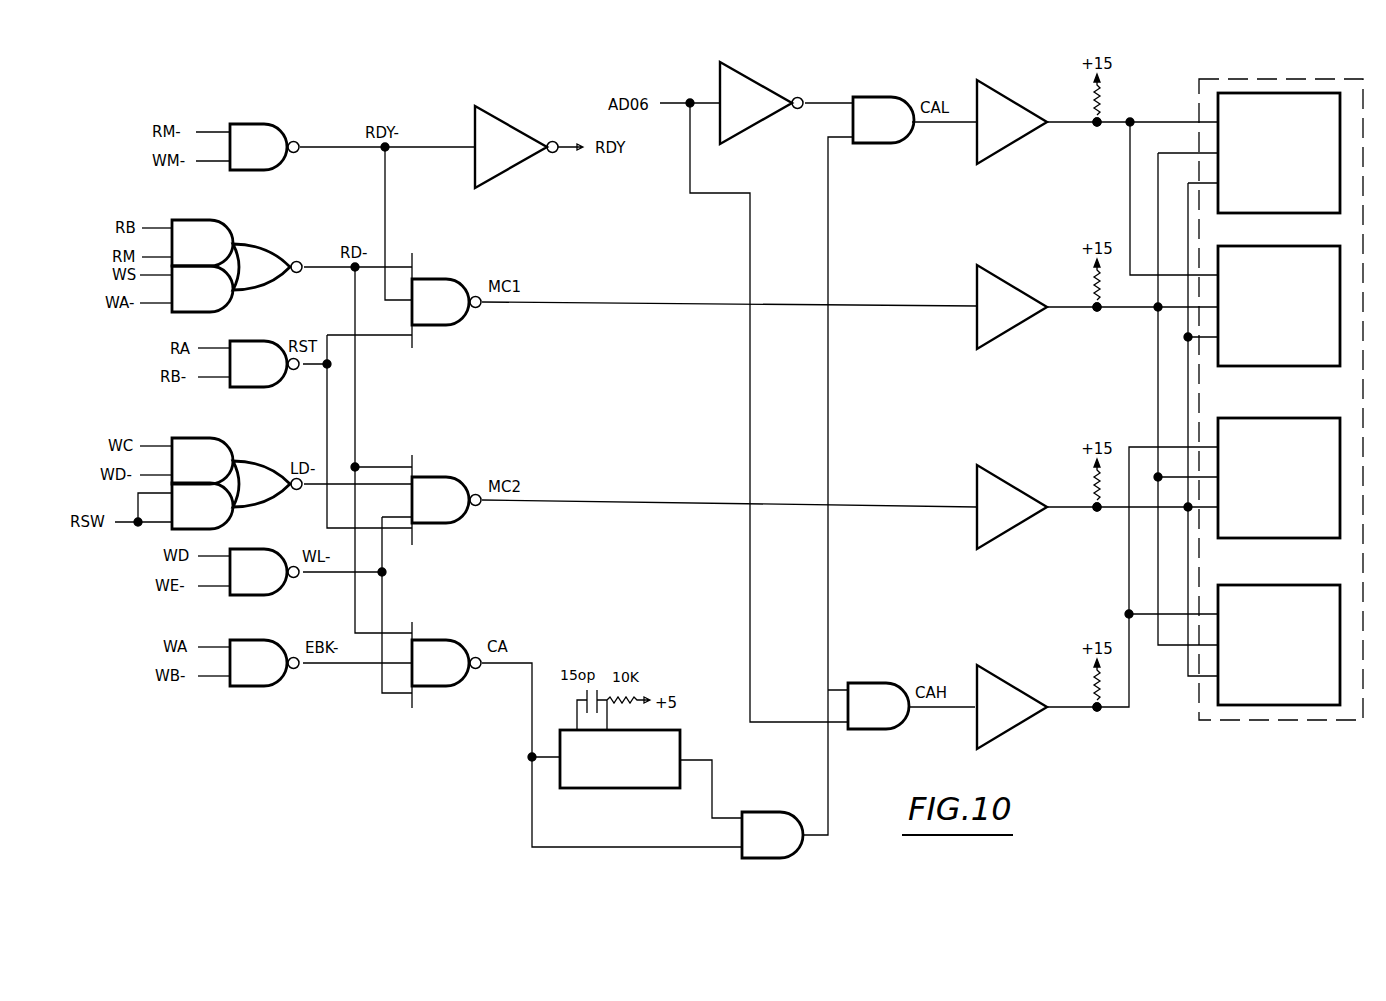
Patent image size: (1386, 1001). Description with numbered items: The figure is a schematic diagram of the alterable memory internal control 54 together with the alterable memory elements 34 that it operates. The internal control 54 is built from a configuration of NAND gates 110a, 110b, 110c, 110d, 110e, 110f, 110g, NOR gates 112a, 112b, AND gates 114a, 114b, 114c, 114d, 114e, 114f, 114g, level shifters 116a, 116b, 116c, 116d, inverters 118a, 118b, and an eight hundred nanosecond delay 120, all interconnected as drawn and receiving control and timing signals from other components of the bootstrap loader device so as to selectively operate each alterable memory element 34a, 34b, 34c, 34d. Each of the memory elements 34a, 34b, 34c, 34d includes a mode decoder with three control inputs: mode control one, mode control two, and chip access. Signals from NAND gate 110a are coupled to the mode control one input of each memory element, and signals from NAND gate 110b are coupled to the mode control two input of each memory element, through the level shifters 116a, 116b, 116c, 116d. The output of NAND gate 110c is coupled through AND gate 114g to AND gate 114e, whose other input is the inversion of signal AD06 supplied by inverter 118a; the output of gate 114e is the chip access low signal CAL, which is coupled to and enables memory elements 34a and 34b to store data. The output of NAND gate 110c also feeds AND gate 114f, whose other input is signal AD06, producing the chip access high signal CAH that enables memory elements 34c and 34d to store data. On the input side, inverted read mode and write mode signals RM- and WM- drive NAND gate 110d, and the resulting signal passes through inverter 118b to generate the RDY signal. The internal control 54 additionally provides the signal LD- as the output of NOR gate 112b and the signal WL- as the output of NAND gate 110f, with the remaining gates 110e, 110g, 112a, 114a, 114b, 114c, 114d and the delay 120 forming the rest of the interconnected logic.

The alterable memory internal control 54 is at (508, 68).
The NAND gate 110a is at (460, 313).
The NAND gate 110b is at (460, 511).
The NAND gate 110c is at (460, 674).
The NAND gate 110d is at (278, 158).
The NAND gate 110e is at (278, 375).
The NAND gate 110f is at (272, 583).
The NAND gate 110g is at (278, 674).
The NOR gate 112a is at (283, 278).
The NOR gate 112b is at (283, 495).
The AND gate 114a is at (220, 254).
The AND gate 114b is at (220, 301).
The AND gate 114c is at (220, 472).
The AND gate 114d is at (220, 518).
The AND gate 114e is at (899, 133).
The AND gate 114f is at (888, 718).
The AND gate 114g is at (788, 847).
The level shifter 116a is at (1022, 103).
The level shifter 116b is at (1018, 287).
The level shifter 116c is at (1018, 487).
The level shifter 116d is at (1016, 687).
The inverter 118a is at (768, 118).
The inverter 118b is at (523, 162).
The 800 nanosecond delay 120 is at (666, 754).
The alterable memory elements 34 is at (1259, 421).
The alterable memory element 34a is at (1330, 120).
The alterable memory element 34b is at (1330, 273).
The alterable memory element 34c is at (1330, 445).
The alterable memory element 34d is at (1330, 612).